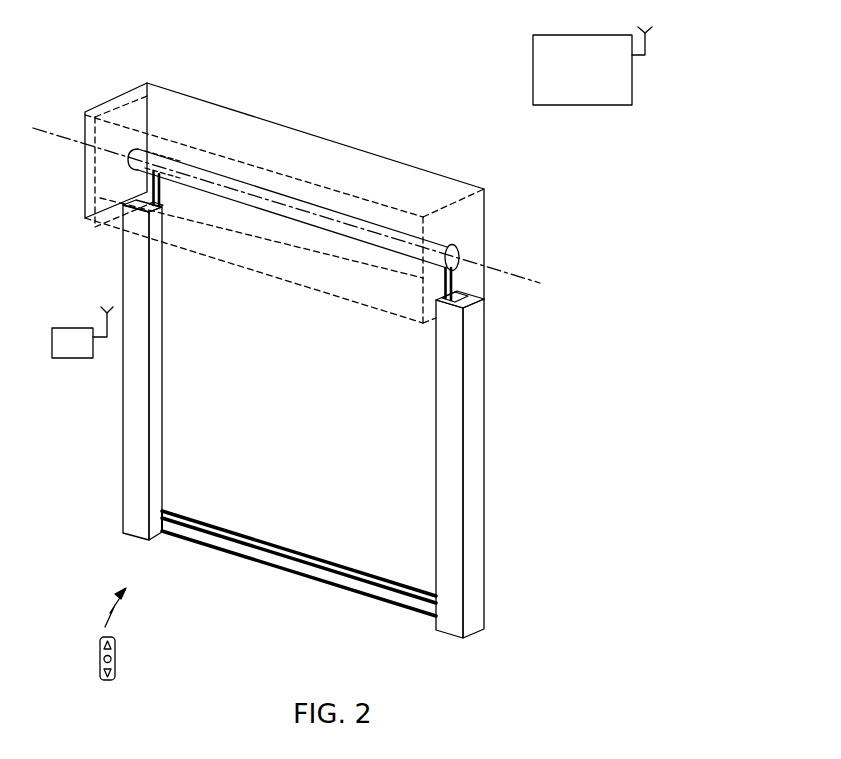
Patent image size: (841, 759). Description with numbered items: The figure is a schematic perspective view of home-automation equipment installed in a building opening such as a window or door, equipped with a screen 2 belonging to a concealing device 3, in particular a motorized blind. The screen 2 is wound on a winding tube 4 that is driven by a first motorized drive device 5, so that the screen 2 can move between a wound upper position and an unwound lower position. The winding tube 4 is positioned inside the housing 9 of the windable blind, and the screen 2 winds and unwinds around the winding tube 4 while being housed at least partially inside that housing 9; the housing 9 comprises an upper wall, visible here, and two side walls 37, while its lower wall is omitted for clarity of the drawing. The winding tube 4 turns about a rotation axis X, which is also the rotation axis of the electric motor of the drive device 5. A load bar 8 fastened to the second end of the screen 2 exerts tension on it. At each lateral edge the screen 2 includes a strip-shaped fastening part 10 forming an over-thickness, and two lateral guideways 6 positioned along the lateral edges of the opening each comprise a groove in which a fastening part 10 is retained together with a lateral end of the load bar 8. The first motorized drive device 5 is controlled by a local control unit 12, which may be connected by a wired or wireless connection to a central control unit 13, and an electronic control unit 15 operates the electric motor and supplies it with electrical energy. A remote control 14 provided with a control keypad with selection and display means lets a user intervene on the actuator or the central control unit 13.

The screen 2 is at (305, 555).
The concealing device 3 is at (275, 342).
The winding tube 4 is at (273, 193).
The first motorized drive device 5 is at (260, 174).
The lateral guideways 6 is at (133, 510).
The load bar 8 is at (362, 585).
The housing 9 is at (412, 183).
The fastening part 10 is at (158, 200).
The local control unit 12 is at (68, 335).
The central control unit 13 is at (543, 65).
The remote control 14 is at (116, 660).
The electronic control unit 15 is at (148, 158).
The side walls 37 is at (463, 225).
The rotation axis X is at (513, 272).